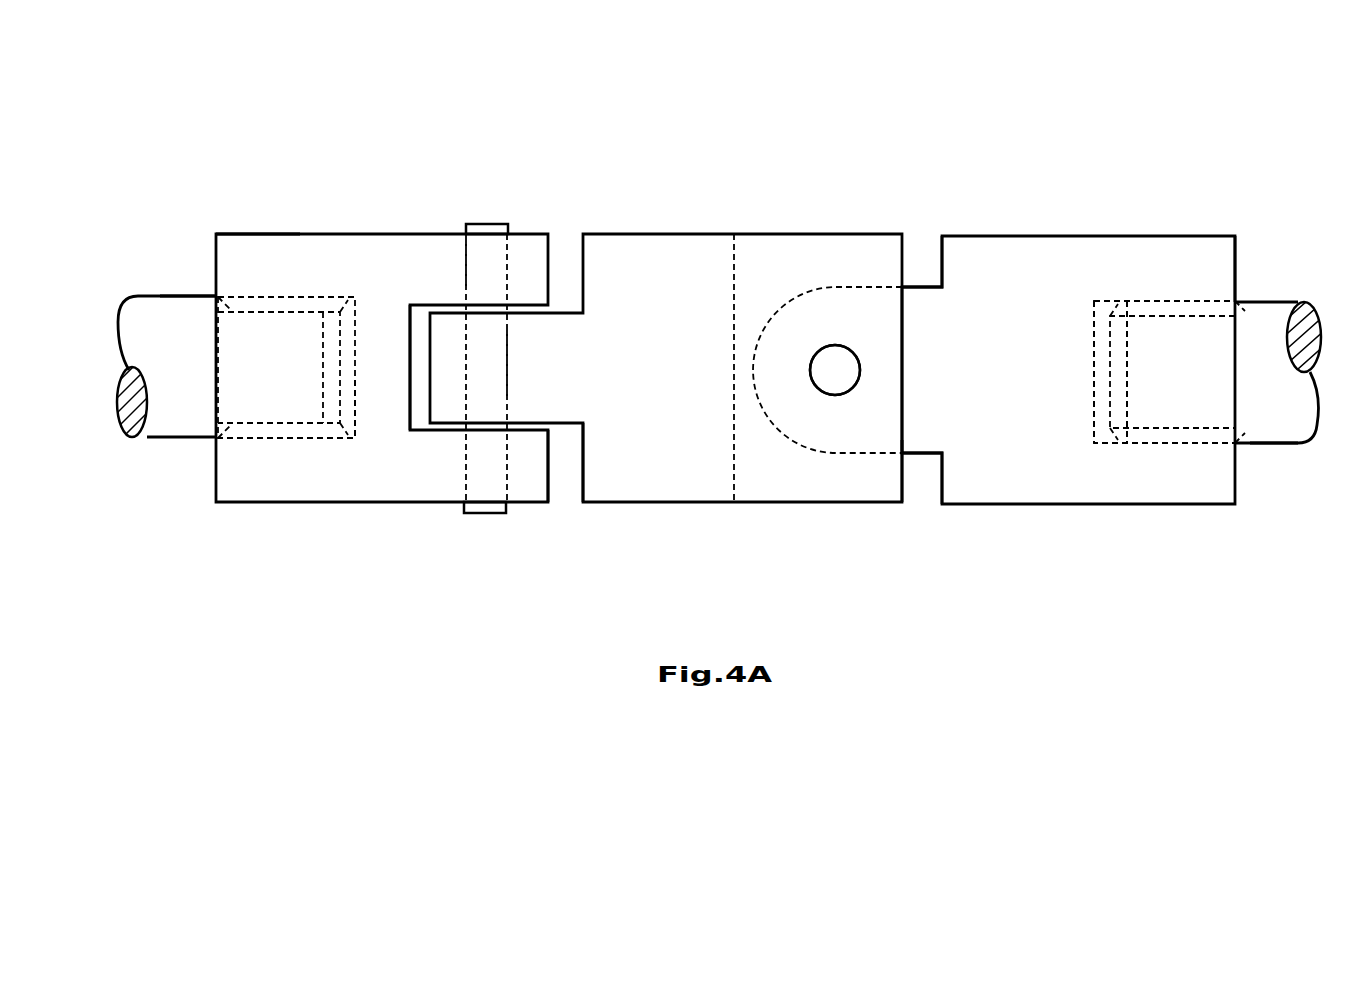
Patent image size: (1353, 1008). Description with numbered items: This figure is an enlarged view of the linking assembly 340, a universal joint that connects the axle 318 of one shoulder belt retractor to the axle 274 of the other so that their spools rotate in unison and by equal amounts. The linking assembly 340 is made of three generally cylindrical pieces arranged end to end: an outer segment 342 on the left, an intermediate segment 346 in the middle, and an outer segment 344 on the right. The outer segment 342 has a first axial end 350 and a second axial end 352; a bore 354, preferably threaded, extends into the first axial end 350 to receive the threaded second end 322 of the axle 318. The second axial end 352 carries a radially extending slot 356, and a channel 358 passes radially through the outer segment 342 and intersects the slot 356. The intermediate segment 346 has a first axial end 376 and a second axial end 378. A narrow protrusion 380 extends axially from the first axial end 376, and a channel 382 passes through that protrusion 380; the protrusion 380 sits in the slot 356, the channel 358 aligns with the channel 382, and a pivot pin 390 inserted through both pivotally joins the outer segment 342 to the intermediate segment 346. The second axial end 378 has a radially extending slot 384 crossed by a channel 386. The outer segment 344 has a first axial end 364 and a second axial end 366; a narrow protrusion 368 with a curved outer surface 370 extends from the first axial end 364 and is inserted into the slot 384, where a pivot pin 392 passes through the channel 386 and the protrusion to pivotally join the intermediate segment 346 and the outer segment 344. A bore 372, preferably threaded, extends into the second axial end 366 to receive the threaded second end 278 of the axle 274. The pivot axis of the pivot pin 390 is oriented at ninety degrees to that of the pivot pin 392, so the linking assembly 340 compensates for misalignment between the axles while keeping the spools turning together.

The linking assembly 340 is at (715, 132).
The outer segment 342 is at (375, 292).
The outer segment 344 is at (1038, 305).
The intermediate segment 346 is at (660, 303).
The first axial end 350 is at (216, 262).
The second axial end 352 is at (548, 480).
The bore 354 is at (355, 410).
The slot 356 is at (420, 355).
The channel 358 is at (465, 266).
The first axial end 364 is at (930, 258).
The second axial end 366 is at (1237, 260).
The protrusion 368 is at (920, 423).
The curved outer surface 370 is at (838, 287).
The bore 372 is at (1157, 300).
The first axial end 376 is at (583, 455).
The second axial end 378 is at (902, 486).
The protrusion 380 is at (485, 360).
The channel 382 is at (507, 367).
The slot 384 is at (735, 275).
The channel 386 is at (828, 397).
The pivot pin 390 is at (490, 225).
The pivot pin 392 is at (857, 373).
The second end 322 is at (165, 337).
The axle 318 is at (182, 405).
The second end 278 is at (1257, 343).
The axle 274 is at (1273, 417).